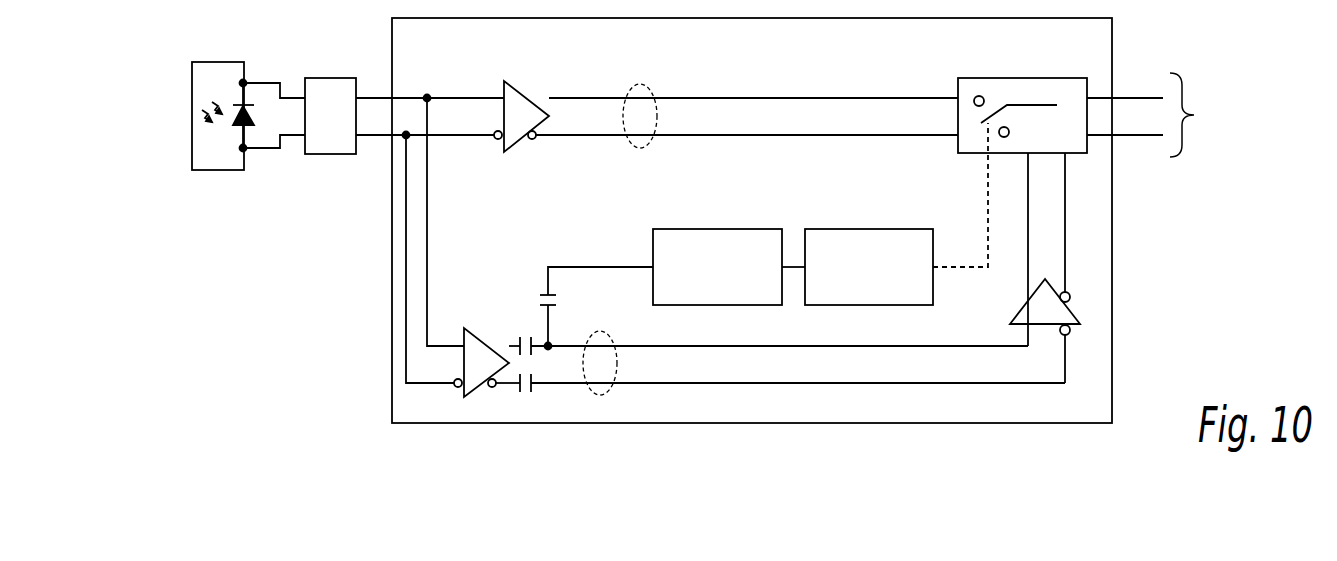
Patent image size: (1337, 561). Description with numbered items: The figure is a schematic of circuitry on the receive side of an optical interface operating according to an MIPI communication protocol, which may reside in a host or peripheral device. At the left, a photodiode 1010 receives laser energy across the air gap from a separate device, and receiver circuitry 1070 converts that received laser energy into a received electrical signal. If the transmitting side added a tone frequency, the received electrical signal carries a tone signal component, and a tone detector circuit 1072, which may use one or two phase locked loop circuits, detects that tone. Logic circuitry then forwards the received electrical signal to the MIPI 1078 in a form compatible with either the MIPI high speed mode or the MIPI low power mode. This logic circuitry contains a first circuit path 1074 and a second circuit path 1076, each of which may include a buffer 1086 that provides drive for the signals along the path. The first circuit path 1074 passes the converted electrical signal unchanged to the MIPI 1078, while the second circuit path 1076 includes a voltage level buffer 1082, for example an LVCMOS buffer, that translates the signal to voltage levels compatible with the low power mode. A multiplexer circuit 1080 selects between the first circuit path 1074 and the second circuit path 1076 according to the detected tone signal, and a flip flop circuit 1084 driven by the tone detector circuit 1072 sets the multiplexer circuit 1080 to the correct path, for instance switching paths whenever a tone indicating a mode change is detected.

The photodiode 1010 is at (218, 61).
The receiver circuitry 1070 is at (334, 76).
The buffer 1086 is at (508, 82).
The first circuit path 1074 is at (641, 83).
The second circuit path 1076 is at (601, 330).
The multiplexer circuit 1080 is at (1023, 77).
The MIPI 1078 is at (1187, 115).
The tone detector circuit 1072 is at (719, 228).
The flip flop circuit 1084 is at (869, 228).
The voltage level buffer 1082 is at (1014, 313).